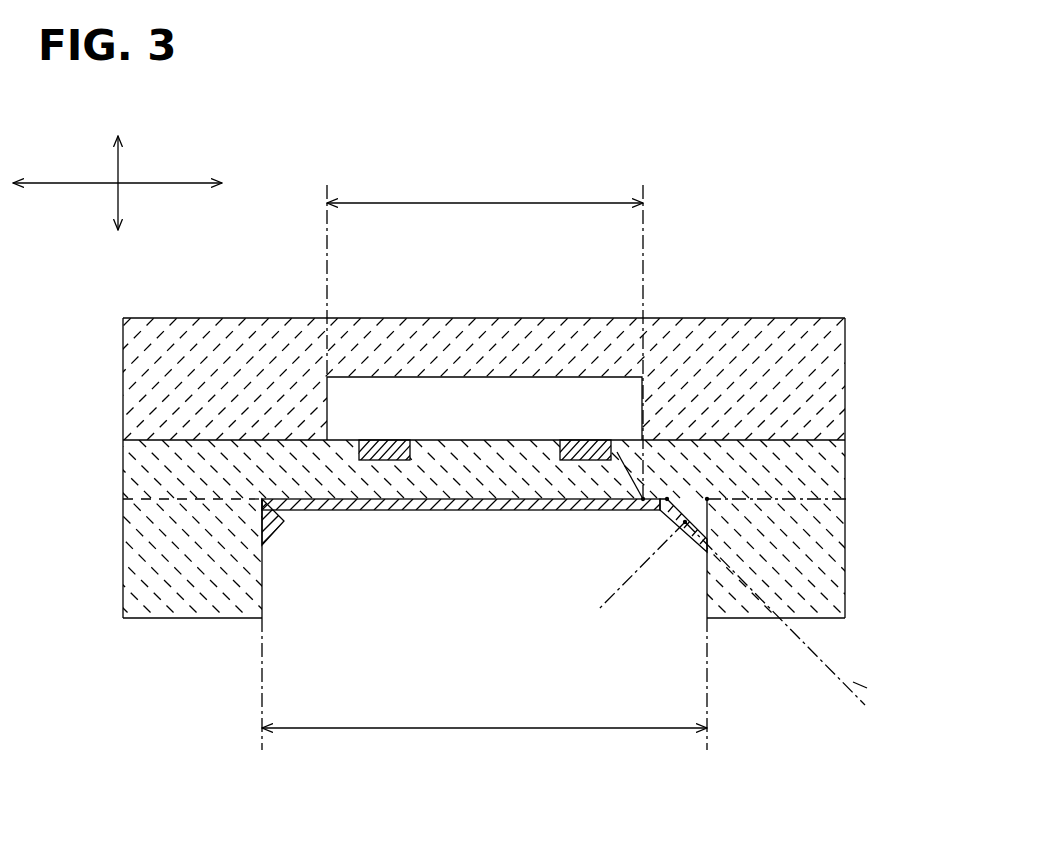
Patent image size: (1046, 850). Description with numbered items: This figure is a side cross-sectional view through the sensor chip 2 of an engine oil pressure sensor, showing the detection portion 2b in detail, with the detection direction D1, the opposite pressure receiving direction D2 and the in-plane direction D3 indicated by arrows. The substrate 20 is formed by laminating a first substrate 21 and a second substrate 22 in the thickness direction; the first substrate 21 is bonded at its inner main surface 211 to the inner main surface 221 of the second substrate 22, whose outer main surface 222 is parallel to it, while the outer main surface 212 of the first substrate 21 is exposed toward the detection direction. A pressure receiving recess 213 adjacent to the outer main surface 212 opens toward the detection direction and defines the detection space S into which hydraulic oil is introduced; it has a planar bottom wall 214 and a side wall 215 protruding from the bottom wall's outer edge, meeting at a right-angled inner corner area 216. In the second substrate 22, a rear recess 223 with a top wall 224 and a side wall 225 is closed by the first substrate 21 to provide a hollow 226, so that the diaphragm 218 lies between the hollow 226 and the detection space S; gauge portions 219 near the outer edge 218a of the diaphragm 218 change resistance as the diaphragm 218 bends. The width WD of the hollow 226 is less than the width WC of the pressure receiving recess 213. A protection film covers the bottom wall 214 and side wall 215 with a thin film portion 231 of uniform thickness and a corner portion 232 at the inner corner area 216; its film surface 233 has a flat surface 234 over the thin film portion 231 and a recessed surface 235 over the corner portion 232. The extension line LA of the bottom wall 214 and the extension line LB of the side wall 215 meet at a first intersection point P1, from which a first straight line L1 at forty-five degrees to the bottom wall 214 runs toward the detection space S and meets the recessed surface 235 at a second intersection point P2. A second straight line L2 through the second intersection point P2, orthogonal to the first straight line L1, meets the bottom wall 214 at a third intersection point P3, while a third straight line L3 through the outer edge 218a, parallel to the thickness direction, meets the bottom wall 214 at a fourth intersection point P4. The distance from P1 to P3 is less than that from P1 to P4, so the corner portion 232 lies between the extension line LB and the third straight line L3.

The sensor chip 2 is at (847, 316).
The detection portion 2b is at (541, 184).
The substrate 20 is at (52, 390).
The first substrate 21 is at (135, 522).
The second substrate 22 is at (135, 406).
The inner main surface 211 is at (758, 440).
The outer main surface 212 is at (163, 619).
The pressure receiving recess 213 is at (445, 546).
The bottom wall 214 is at (490, 511).
The side wall 215 is at (265, 580).
The inner corner area 216 is at (272, 512).
The diaphragm 218 is at (488, 452).
The outer edge 218a is at (330, 477).
The gauge portion 219 is at (575, 440).
The inner main surface 221 is at (775, 440).
The outer main surface 222 is at (762, 322).
The rear recess 223 is at (641, 379).
The top wall 224 is at (462, 362).
The side wall 225 is at (327, 412).
The hollow 226 is at (398, 393).
The thin film portion 231 is at (578, 512).
The corner portion 232 is at (266, 508).
The film surface 233 is at (266, 560).
The flat surface 234 is at (393, 512).
The recessed surface 235 is at (700, 542).
The detection space S is at (532, 545).
The first intersection point P1 is at (707, 499).
The second intersection point P2 is at (684, 522).
The third intersection point P3 is at (667, 499).
The fourth intersection point P4 is at (643, 499).
The first straight line L1 is at (612, 607).
The second straight line L2 is at (867, 688).
The third straight line L3 is at (649, 222).
The extension line LA is at (847, 503).
The extension line LB is at (718, 703).
The width dimension WC is at (484, 689).
The width dimension WD is at (485, 276).
The detection direction D1 is at (117, 223).
The pressure receiving direction D2 is at (117, 145).
The in-plane direction D3 is at (139, 183).